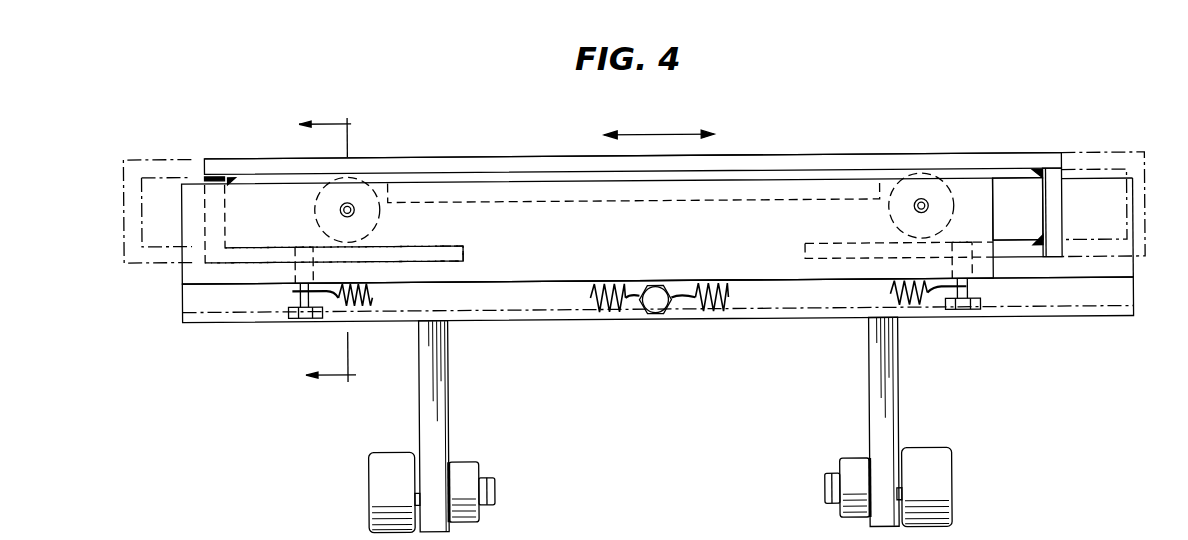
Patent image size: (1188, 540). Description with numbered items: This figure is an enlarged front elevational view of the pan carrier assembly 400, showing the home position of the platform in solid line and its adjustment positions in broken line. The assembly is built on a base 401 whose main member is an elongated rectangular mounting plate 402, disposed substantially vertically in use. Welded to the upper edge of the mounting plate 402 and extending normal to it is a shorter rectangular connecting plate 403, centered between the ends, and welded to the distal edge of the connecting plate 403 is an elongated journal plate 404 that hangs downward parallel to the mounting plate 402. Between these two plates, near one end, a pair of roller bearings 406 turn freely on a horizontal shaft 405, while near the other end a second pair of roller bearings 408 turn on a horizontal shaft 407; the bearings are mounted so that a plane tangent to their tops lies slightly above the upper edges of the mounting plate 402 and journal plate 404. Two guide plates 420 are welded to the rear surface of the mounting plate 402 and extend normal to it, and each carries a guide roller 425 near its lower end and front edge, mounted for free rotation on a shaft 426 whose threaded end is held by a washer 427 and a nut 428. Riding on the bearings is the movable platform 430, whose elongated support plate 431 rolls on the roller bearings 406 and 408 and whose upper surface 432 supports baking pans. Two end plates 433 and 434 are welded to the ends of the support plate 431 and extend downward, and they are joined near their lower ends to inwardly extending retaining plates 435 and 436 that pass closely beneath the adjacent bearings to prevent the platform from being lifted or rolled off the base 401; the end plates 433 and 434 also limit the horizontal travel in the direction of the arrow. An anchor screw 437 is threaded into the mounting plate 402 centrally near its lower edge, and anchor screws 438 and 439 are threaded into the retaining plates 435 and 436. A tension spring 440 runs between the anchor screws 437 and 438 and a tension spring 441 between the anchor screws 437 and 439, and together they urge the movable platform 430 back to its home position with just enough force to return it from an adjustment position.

The pan carrier assembly 400 is at (445, 84).
The base 401 is at (478, 328).
The mounting plate 402 is at (1080, 312).
The connecting plate 403 is at (718, 203).
The journal plate 404 is at (195, 268).
The horizontal shaft 405 is at (344, 210).
The roller bearings 406 is at (381, 229).
The horizontal shaft 407 is at (917, 211).
The roller bearings 408 is at (985, 214).
The guide plates 420 is at (432, 406).
The guide roller 425 is at (380, 475).
The shaft 426 is at (494, 490).
The washer 427 is at (448, 461).
The nut 428 is at (478, 468).
The movable platform 430 is at (858, 150).
The support plate 431 is at (498, 160).
The upper surface 432 is at (584, 156).
The end plate 433 is at (222, 225).
The end plate 434 is at (1058, 218).
The retaining plate 435 is at (466, 259).
The retaining plate 436 is at (805, 253).
The anchor screw 437 is at (657, 306).
The anchor screw 438 is at (300, 317).
The anchor screw 439 is at (966, 318).
The tension spring 440 is at (600, 316).
The tension spring 441 is at (735, 312).